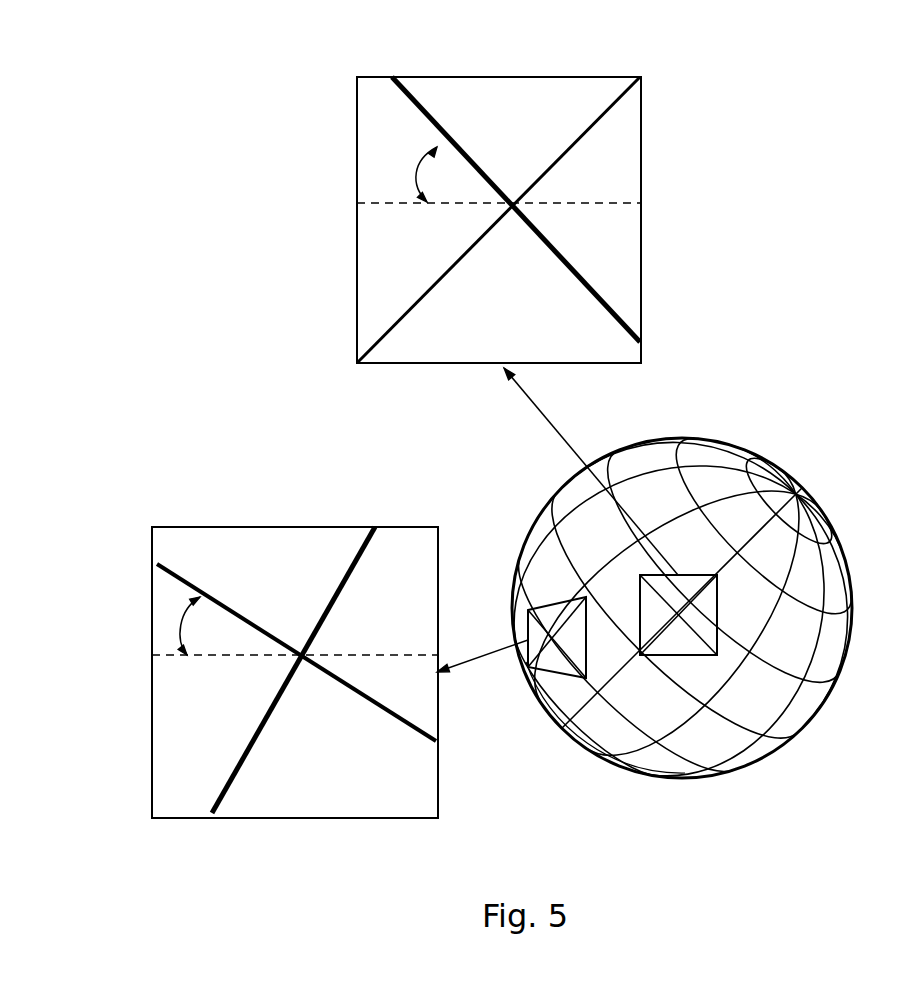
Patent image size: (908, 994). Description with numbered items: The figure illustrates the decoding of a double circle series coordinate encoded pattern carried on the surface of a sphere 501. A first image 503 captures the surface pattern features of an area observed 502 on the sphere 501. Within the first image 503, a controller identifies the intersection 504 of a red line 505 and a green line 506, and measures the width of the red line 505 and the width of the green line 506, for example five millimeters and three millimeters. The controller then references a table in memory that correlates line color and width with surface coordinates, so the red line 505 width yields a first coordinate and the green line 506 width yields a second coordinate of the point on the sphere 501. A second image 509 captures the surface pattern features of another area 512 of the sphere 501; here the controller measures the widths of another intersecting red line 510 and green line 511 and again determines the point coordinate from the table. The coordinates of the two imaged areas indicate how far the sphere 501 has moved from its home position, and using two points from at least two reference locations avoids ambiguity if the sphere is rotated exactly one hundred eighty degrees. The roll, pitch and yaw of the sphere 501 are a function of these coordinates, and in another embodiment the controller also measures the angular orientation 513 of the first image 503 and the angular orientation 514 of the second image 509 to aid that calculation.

The sphere 501 is at (805, 490).
The area observed 502 is at (678, 573).
The first image 503 is at (498, 77).
The intersection 504 is at (541, 207).
The red line 505 is at (602, 298).
The green line 506 is at (604, 113).
The second image 509 is at (295, 527).
The red line 510 is at (393, 720).
The green line 511 is at (360, 543).
The another area 512 is at (586, 597).
The angular orientation 513 is at (413, 180).
The angular orientation 514 is at (180, 625).